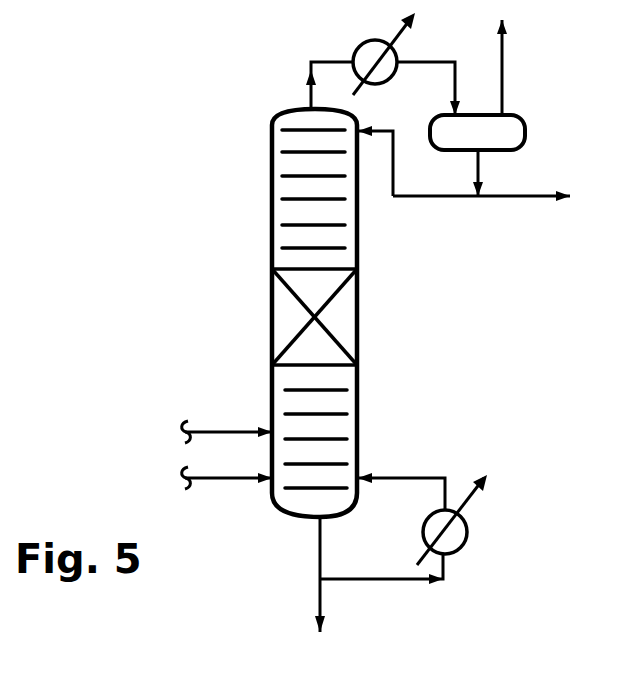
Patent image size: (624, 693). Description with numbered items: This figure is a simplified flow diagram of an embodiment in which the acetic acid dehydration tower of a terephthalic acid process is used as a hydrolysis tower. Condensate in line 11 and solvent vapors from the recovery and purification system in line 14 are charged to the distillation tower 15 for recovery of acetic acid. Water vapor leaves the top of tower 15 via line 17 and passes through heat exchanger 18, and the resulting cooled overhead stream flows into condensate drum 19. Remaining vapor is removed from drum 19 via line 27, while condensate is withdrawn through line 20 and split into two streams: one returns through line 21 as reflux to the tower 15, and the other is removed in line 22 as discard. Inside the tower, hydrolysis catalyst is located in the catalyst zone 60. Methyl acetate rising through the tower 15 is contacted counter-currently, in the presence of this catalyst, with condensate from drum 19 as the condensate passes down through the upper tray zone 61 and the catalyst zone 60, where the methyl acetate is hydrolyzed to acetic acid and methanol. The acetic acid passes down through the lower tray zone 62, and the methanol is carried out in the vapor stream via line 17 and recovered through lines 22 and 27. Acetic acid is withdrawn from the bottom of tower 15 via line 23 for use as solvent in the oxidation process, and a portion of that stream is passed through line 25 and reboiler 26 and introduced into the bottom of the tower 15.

The line 11 is at (217, 432).
The line 14 is at (230, 479).
The distillation tower 15 is at (358, 233).
The line 17 is at (311, 97).
The heat exchanger 18 is at (360, 50).
The condensate drum 19 is at (526, 133).
The line 20 is at (479, 160).
The line 21 is at (420, 197).
The line 22 is at (510, 197).
The line 23 is at (320, 555).
The line 25 is at (385, 580).
The reboiler 26 is at (468, 537).
The line 27 is at (503, 80).
The catalyst zone 60 is at (347, 309).
The upper tray zone 61 is at (290, 228).
The lower tray zone 62 is at (354, 439).